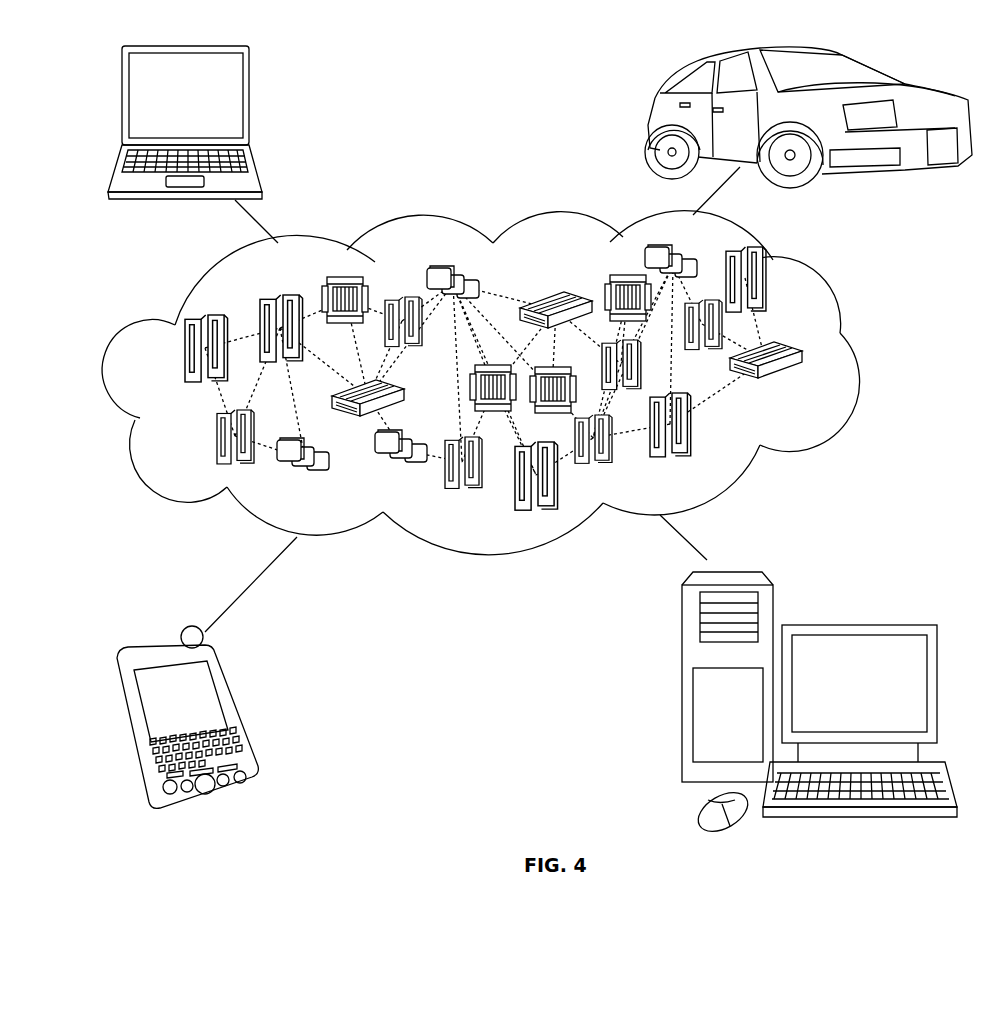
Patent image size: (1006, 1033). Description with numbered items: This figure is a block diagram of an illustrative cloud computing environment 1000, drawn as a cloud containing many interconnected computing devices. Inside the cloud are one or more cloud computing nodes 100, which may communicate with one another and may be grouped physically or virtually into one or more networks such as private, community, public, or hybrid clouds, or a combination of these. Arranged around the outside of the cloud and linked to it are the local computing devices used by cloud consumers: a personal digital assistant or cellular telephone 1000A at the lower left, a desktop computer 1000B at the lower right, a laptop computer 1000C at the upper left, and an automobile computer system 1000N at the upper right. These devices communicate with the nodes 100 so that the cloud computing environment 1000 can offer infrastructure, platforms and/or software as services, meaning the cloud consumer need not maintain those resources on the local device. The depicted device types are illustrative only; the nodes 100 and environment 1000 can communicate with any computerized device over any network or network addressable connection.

The cloud computing nodes 100 is at (517, 383).
The cloud computing environment 1000 is at (858, 361).
The personal digital assistant (PDA) or cellular telephone 1000A is at (244, 711).
The desktop computer 1000B is at (853, 622).
The laptop computer 1000C is at (247, 104).
The automobile computer system 1000N is at (652, 122).